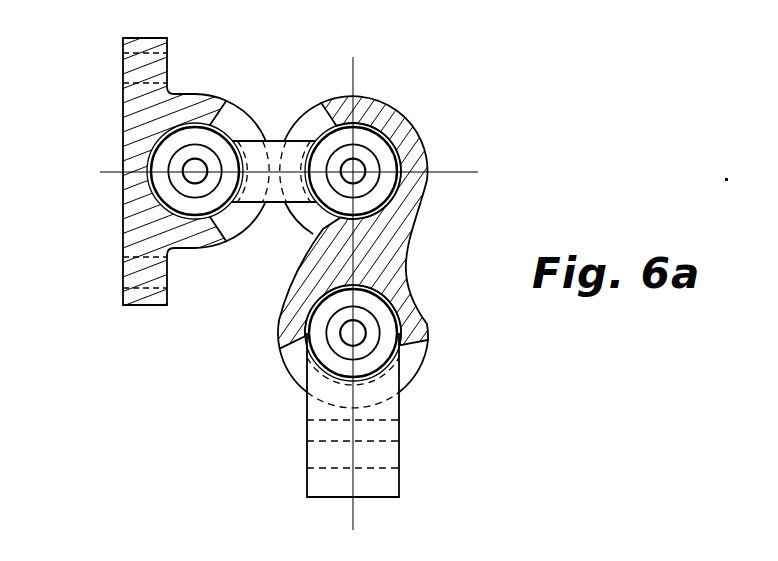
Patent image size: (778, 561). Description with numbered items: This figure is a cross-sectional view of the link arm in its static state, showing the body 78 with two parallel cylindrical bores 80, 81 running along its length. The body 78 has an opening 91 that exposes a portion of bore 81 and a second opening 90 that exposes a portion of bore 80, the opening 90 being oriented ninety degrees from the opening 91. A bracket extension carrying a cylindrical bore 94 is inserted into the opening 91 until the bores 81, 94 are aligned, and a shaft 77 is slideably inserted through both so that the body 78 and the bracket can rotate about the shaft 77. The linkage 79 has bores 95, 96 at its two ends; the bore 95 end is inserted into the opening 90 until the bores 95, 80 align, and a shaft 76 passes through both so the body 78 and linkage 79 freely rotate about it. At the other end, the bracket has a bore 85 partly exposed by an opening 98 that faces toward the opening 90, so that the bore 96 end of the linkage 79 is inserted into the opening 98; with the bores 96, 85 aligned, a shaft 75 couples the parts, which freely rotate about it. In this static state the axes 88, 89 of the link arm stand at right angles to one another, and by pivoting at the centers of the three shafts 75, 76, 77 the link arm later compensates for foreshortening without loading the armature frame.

The shaft 75 is at (193, 183).
The shaft 76 is at (312, 235).
The shaft 77 is at (366, 330).
The body 78 is at (427, 145).
The linkage 79 is at (276, 150).
The cylindrical bore 80 is at (402, 120).
The cylindrical bore 81 is at (390, 305).
The bore 85 is at (188, 124).
The axis 88 is at (463, 171).
The axis 89 is at (357, 523).
The second opening 90 is at (311, 107).
The opening 91 is at (388, 398).
The cylindrical bore 94 is at (388, 354).
The bore 95 is at (367, 147).
The bore 96 is at (150, 187).
The opening 98 is at (237, 123).